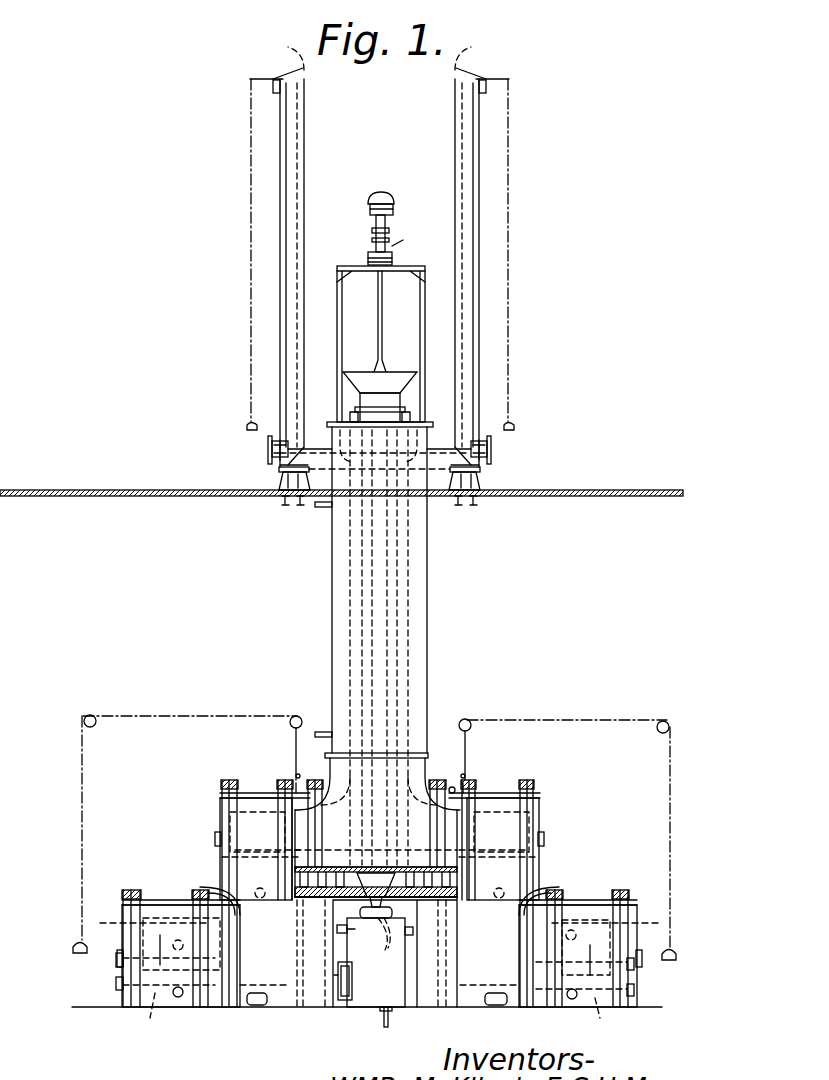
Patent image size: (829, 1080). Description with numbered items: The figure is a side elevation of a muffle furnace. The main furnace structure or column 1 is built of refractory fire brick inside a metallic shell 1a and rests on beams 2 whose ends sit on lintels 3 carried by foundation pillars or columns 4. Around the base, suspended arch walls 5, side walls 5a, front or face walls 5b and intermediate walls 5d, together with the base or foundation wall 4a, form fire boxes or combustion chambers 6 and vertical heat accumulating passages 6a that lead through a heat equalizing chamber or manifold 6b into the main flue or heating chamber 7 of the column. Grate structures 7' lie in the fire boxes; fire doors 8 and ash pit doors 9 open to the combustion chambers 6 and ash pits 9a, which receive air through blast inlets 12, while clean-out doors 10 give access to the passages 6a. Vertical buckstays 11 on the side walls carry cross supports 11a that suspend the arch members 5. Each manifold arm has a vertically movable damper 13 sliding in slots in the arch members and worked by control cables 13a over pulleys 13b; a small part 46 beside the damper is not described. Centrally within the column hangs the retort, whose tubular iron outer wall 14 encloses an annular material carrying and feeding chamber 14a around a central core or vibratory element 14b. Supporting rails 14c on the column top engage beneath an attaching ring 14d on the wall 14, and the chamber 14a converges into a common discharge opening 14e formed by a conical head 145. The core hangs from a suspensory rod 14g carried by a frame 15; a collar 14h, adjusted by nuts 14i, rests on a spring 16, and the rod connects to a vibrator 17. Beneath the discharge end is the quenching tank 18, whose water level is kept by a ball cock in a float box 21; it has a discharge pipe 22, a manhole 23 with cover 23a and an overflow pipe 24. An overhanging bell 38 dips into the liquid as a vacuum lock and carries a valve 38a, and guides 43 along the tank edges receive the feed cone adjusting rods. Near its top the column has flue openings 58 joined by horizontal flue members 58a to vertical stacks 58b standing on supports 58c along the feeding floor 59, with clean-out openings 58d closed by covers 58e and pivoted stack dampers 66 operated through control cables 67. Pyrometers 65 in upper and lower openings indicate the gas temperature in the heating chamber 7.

The furnace structure or column 1 is at (418, 658).
The metallic shell 1a is at (428, 555).
The beams 2 is at (328, 867).
The lintels 3 is at (462, 893).
The foundation pillars or columns 4 is at (311, 1007).
The base or foundation wall 4a is at (416, 862).
The suspended arch walls 5 is at (263, 812).
The side walls 5a is at (150, 926).
The front or face walls 5b is at (123, 906).
The intermediate or front walls 5d is at (221, 857).
The fire boxes or combustion chambers 6 is at (374, 940).
The vertical heat accumulating chambers or passages 6a is at (541, 842).
The heat equalizing chamber or manifold 6b is at (452, 786).
The main flue or heating chamber 7 is at (421, 647).
The grate structures 7' is at (376, 946).
The fire doors 8 is at (116, 959).
The ash pit doors 9 is at (116, 985).
The ash pits 9a is at (376, 1018).
The clean-out doors 10 is at (216, 838).
The conduit 11 is at (238, 857).
The cross supports 11a is at (224, 780).
The blast inlets 12 is at (178, 998).
The vertically movable damper 13 is at (296, 782).
The control cables 13a is at (82, 812).
The pulleys 13b is at (88, 714).
The outer wall of retort 14 is at (400, 623).
The annular material carrying and feeding chamber 14a is at (395, 607).
The central core or vibratory element 14b is at (388, 587).
The supporting rails or beams 14c is at (360, 412).
The attaching ring 14d is at (404, 411).
The common discharge opening 14e is at (384, 942).
The suspensory element or rod 14g is at (383, 350).
The collar 14h is at (369, 262).
The nuts 14i is at (376, 243).
The nozzle 145 is at (368, 903).
The support or frame 15 is at (343, 326).
The resilient element or spring 16 is at (393, 252).
The vibrator 17 is at (386, 199).
The quenching tub or tank 18 is at (369, 998).
The float box or tank 21 is at (349, 935).
The discharge pipe 22 is at (392, 1026).
The manhole 23 is at (256, 1007).
The manhole cover 23a is at (337, 972).
The overflow connection or pipe 24 is at (413, 932).
The overhanging shield or bell 38 is at (392, 909).
The valve 38a is at (337, 931).
The guides 43 is at (256, 982).
The pin 46 is at (292, 792).
The flue openings 58 is at (330, 447).
The horizontally disposed flue members 58a is at (316, 472).
The vertically disposed stacks 58b is at (279, 281).
The supports 58c is at (282, 482).
The clean-out openings 58d is at (268, 443).
The covers 58e is at (270, 455).
The feeding floor 59 is at (192, 491).
The pyrometers 65 is at (318, 508).
The pivoted stack dampers 66 is at (290, 68).
The control cables 67 is at (279, 236).